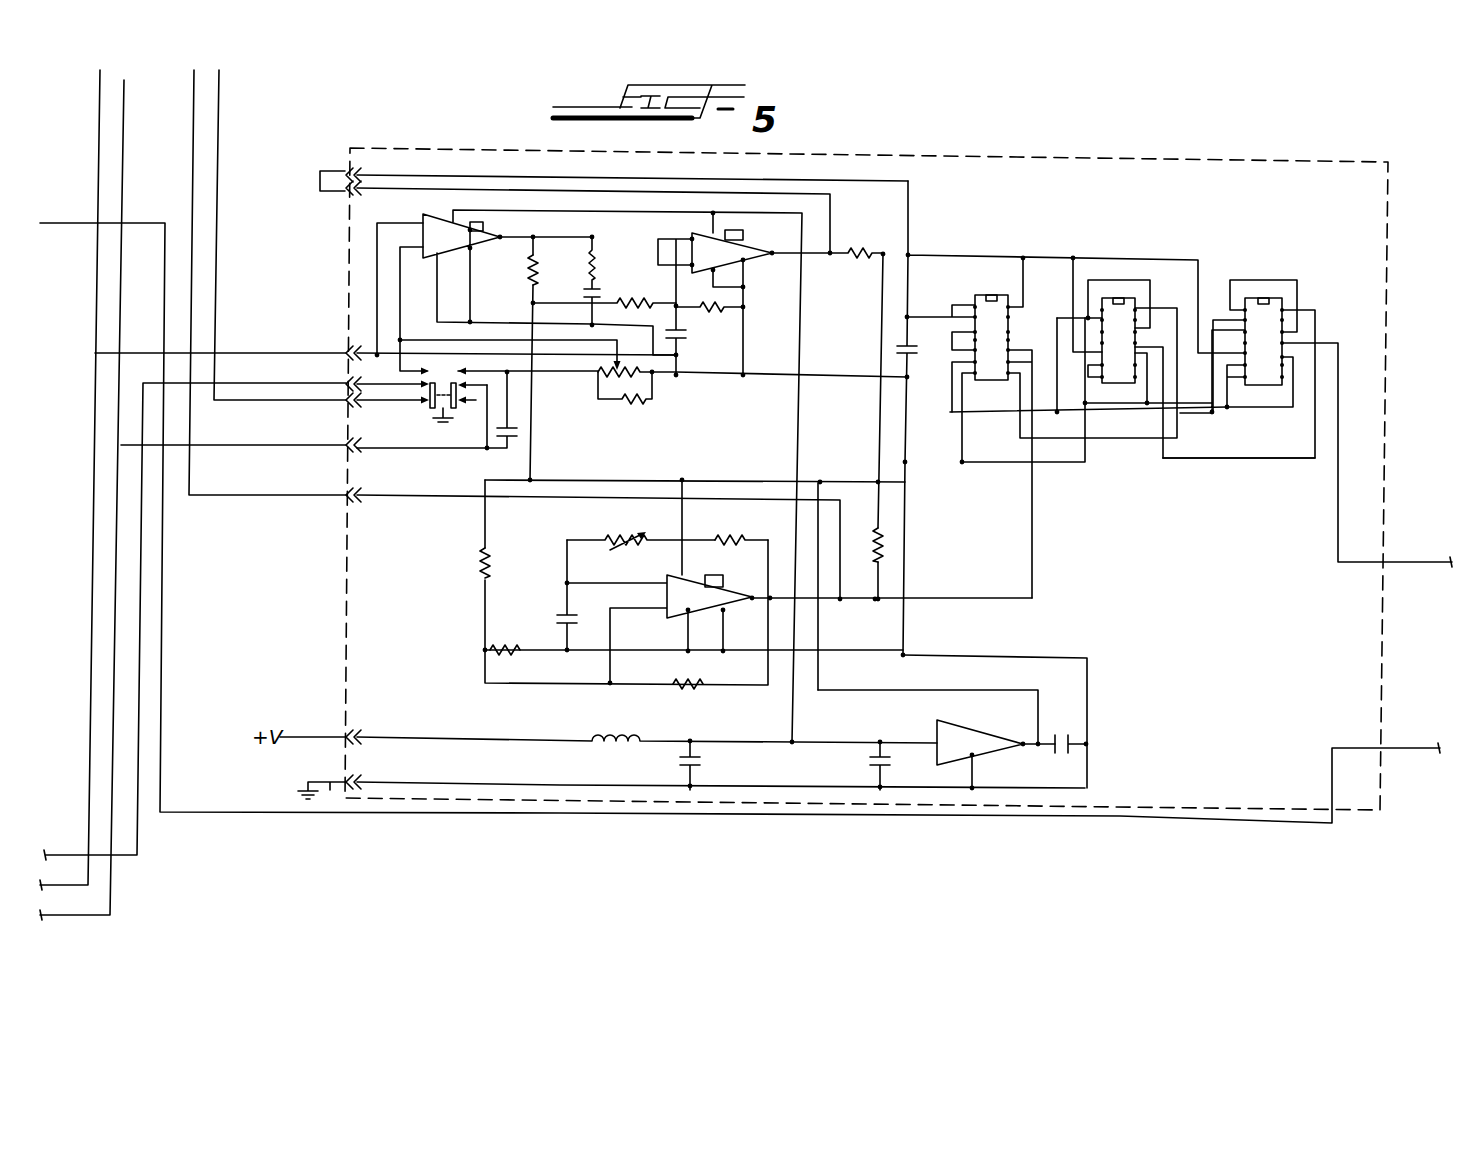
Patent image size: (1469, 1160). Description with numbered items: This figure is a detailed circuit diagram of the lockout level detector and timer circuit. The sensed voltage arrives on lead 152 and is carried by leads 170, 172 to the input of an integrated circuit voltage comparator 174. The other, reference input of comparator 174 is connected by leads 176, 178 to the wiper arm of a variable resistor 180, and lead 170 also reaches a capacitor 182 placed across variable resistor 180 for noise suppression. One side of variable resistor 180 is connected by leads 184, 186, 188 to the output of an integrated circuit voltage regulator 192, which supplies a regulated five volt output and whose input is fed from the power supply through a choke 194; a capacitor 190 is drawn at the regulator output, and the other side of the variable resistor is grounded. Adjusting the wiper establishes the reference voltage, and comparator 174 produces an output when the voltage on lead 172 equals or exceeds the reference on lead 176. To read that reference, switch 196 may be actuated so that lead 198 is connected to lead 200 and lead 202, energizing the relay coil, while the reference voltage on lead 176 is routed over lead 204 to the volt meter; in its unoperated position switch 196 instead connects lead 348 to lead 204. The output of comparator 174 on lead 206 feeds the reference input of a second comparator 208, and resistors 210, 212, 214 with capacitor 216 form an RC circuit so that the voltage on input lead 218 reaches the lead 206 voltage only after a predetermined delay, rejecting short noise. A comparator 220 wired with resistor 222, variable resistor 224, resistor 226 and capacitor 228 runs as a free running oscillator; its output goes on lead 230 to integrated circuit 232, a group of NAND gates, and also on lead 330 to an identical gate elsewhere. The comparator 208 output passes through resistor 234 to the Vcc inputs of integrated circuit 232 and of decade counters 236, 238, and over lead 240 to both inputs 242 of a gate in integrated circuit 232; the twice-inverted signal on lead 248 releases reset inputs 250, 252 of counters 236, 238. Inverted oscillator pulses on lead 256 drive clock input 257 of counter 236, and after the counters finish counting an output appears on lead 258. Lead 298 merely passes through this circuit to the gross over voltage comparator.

The lead 152 is at (90, 667).
The lead 170 is at (250, 353).
The lead 172 is at (377, 290).
The integrated circuit voltage comparator 174 is at (456, 247).
The lead 176 is at (400, 338).
The lead 178 is at (473, 340).
The variable resistor 180 is at (653, 380).
The capacitor 182 is at (623, 403).
The lead 184 is at (532, 458).
The lead 186 is at (707, 480).
The lead 188 is at (970, 690).
The capacitor 190 is at (1087, 743).
The integrated circuit voltage regulator 192 is at (970, 756).
The choke 194 is at (640, 732).
The switch 196 is at (442, 397).
The lead 198 is at (490, 372).
The lead 200 is at (452, 449).
The lead 202 is at (115, 677).
The lead 204 is at (170, 857).
The lead 206 is at (550, 235).
The integrated circuit comparator 208 is at (724, 265).
The resistor 210 is at (531, 262).
The resistor 212 is at (636, 303).
The resistor 214 is at (720, 307).
The capacitor 216 is at (683, 335).
The input lead 218 is at (690, 238).
The integrated circuit comparator 220 is at (699, 607).
The resistor 222 is at (737, 538).
The variable resistor 224 is at (633, 522).
The resistor 226 is at (700, 683).
The capacitor 228 is at (558, 618).
The lead 230 is at (1032, 578).
The integrated circuit 232 is at (1005, 352).
The resistor 234 is at (858, 252).
The integrated circuit decade counter 236 is at (1132, 352).
The integrated circuit decade counter 238 is at (1275, 352).
The lead 240 is at (910, 252).
The inputs 242 is at (965, 305).
The lead 248 is at (958, 408).
The reset input 250 is at (1088, 316).
The reset input 252 is at (1217, 320).
The lead 256 is at (1120, 440).
The clock input 257 is at (1140, 307).
The lead 258 is at (1338, 472).
The lead 298 is at (1433, 733).
The lead 330 is at (432, 497).
The lead 348 is at (219, 235).